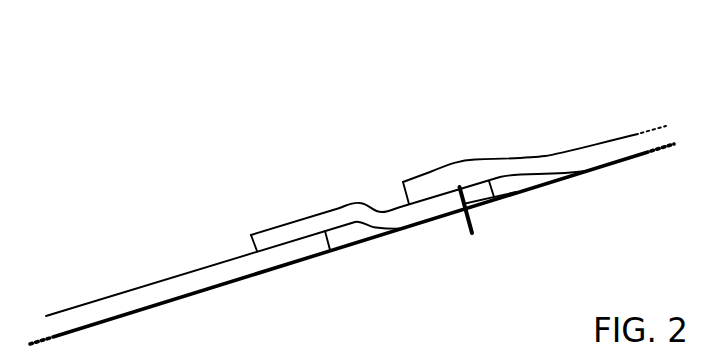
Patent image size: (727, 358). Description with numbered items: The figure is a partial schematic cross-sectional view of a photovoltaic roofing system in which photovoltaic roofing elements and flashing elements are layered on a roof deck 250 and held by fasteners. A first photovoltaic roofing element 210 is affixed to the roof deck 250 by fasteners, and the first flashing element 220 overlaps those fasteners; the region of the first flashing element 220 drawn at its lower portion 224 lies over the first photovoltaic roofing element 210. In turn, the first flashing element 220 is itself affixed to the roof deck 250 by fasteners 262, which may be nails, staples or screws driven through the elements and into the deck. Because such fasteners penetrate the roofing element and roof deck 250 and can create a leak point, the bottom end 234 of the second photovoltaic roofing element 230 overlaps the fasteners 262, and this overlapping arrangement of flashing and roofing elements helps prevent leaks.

The first photovoltaic roofing element 210 is at (165, 222).
The first flashing element 220 is at (340, 170).
The first pad 224 is at (287, 230).
The second photovoltaic roofing element 230 is at (547, 103).
The bottom end of the second photovoltaic roofing element 234 is at (440, 182).
The roof deck 250 is at (403, 290).
The fasteners 262 is at (475, 232).